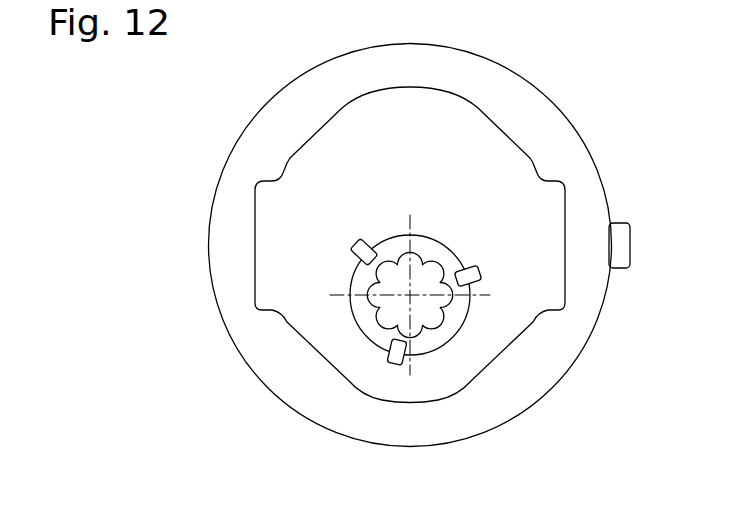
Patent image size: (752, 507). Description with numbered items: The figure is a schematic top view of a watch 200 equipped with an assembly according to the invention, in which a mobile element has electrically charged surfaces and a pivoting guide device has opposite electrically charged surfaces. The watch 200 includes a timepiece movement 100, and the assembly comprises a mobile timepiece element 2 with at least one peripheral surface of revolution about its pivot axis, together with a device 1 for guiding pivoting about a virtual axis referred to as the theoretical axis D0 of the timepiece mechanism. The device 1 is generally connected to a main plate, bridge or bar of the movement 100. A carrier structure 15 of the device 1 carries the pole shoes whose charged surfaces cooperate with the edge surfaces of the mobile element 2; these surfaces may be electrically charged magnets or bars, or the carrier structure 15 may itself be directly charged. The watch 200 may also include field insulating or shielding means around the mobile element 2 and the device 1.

The movement 100 is at (473, 130).
The watch 200 is at (609, 201).
The device for guiding pivoting 1 is at (475, 273).
The mobile timepiece element 2 is at (440, 345).
The carrier structure 15 is at (356, 246).
The theoretical axis D0 is at (396, 308).